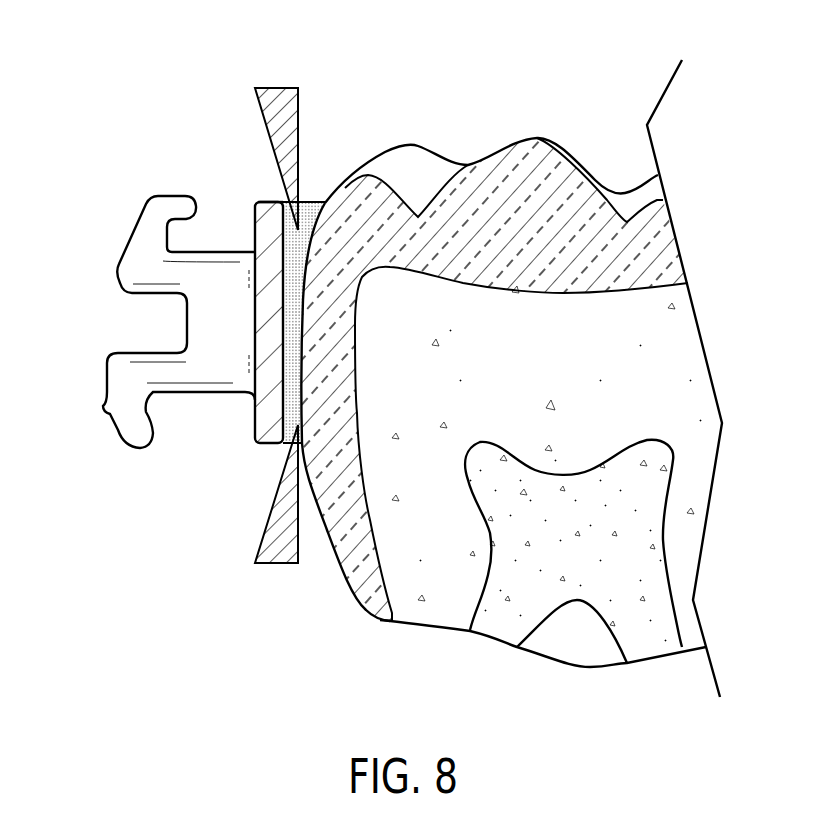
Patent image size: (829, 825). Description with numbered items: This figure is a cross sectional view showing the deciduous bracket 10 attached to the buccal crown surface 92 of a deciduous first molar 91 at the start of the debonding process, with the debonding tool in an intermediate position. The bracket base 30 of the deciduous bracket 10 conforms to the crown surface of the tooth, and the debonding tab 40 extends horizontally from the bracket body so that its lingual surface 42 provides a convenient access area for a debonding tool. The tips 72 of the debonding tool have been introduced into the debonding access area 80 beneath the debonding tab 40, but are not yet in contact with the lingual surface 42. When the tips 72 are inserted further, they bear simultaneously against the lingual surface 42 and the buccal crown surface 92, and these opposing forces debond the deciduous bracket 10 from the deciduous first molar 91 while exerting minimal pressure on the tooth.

The deciduous bracket 10 is at (70, 396).
The bracket base 30 is at (268, 436).
The debonding tab 40 is at (268, 414).
The lingual surface 42 is at (262, 203).
The tips 72 is at (277, 90).
The debonding access area 80 is at (326, 202).
The deciduous first molar 91 is at (542, 137).
The buccal crown surface 92 is at (331, 200).